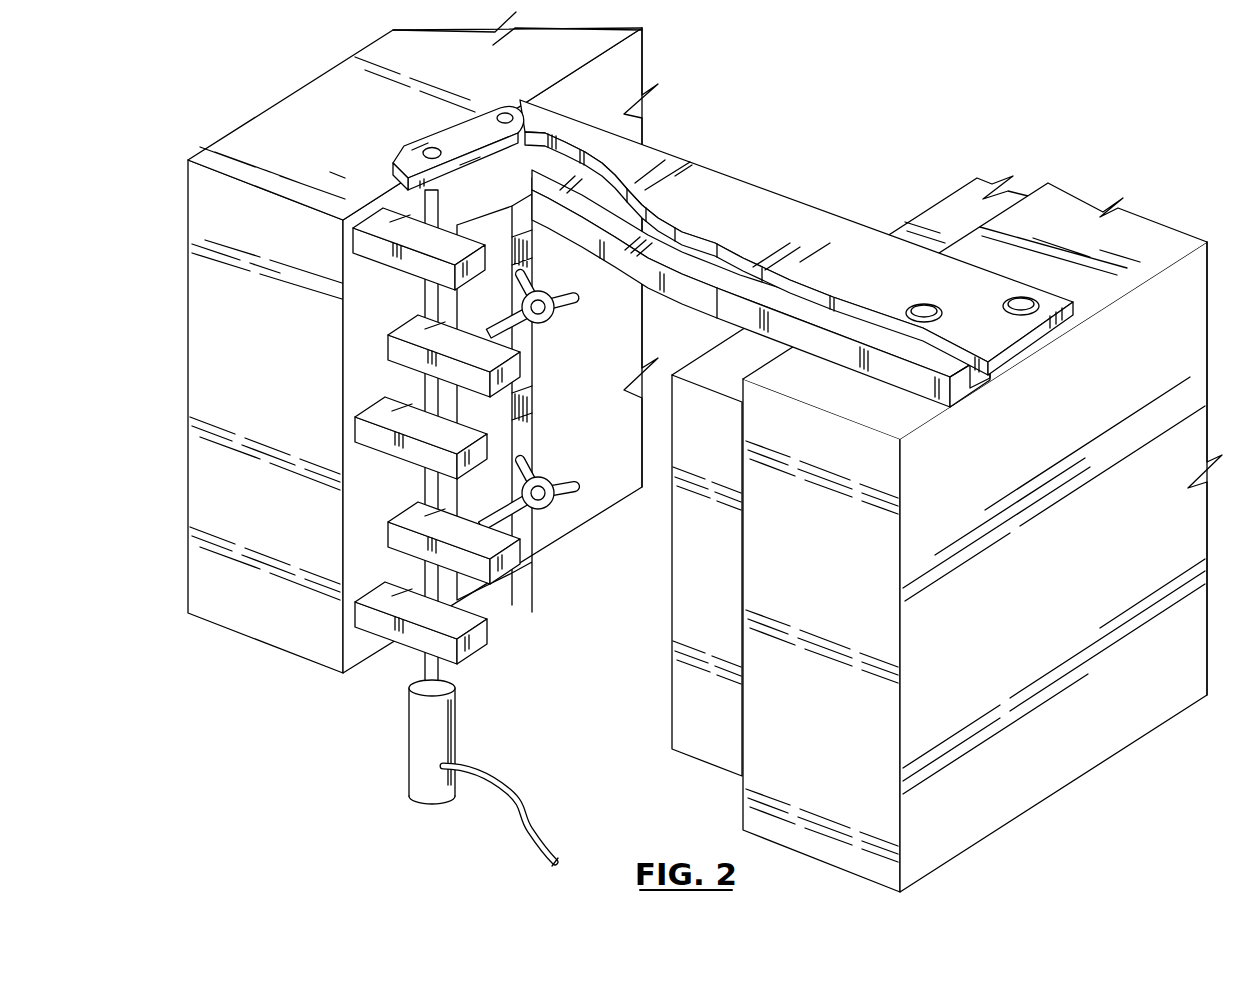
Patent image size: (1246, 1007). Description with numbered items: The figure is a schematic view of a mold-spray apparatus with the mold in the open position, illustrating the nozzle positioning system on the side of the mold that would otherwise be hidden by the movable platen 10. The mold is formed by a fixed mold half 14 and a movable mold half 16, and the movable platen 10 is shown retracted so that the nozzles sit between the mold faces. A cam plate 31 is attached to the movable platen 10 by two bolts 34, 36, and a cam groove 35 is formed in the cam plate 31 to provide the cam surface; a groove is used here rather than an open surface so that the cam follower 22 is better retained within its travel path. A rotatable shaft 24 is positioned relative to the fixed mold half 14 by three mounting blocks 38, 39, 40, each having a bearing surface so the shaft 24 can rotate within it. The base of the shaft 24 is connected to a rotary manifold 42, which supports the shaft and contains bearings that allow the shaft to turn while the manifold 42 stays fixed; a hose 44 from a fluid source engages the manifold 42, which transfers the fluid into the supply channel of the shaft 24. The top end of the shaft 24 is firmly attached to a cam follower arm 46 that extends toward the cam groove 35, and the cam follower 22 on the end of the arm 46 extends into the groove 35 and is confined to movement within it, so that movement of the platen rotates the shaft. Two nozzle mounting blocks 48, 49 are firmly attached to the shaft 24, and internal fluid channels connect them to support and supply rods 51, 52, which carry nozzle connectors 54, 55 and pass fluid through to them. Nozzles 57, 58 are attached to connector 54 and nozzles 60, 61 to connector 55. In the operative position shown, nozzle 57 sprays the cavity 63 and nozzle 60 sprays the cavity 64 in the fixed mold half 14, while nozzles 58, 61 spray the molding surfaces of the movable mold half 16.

The movable platen 10 is at (809, 547).
The fixed mold half 14 is at (238, 482).
The movable mold half 16 is at (691, 547).
The cam follower 22 is at (530, 125).
The rotatable shaft 24 is at (424, 288).
The cam plate 31 is at (726, 229).
The bolt 34 is at (1010, 306).
The cam groove 35 is at (984, 378).
The bolt 36 is at (915, 308).
The mounting block 38 is at (372, 246).
The mounting block 39 is at (376, 433).
The mounting block 40 is at (376, 620).
The rotary manifold 42 is at (408, 733).
The hose 44 is at (515, 808).
The cam follower arm 46 is at (466, 133).
The nozzle mounting block 48 is at (396, 348).
The nozzle mounting block 49 is at (404, 535).
The support and supply rod 51 is at (524, 352).
The support and supply rod 52 is at (512, 518).
The nozzle connector 54 is at (550, 318).
The nozzle connector 55 is at (550, 509).
The nozzle 57 is at (523, 277).
The nozzle 58 is at (578, 297).
The nozzle 60 is at (530, 458).
The nozzle 61 is at (578, 487).
The cavity 63 is at (500, 238).
The cavity 64 is at (500, 420).